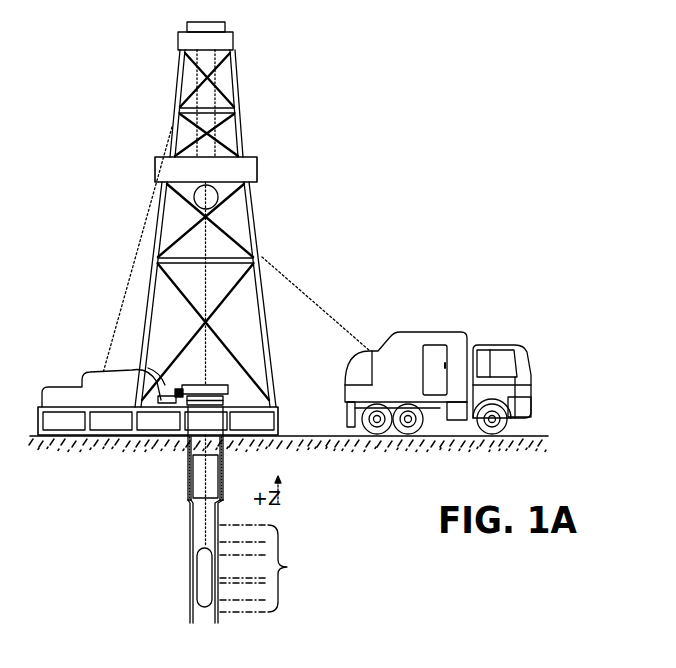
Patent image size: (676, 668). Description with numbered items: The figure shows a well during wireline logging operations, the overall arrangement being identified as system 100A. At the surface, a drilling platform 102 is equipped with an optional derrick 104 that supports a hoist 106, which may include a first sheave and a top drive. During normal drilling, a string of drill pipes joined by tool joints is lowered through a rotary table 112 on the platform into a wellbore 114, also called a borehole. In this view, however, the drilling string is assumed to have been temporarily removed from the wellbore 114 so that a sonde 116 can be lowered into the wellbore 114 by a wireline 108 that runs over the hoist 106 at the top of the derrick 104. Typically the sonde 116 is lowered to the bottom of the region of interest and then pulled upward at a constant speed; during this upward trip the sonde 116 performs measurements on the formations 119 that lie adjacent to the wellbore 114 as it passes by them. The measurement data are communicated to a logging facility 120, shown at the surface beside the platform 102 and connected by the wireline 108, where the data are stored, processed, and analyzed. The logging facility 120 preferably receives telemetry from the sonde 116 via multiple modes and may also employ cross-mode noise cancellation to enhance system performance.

The wellsite system 100A is at (427, 217).
The drilling platform 102 is at (279, 418).
The derrick 104 is at (270, 375).
The hoist 106 is at (219, 197).
The wireline 108 is at (271, 262).
The rotary table 112 is at (220, 385).
The wellbore 114 is at (191, 512).
The sonde 116 is at (199, 568).
The formations 119 is at (274, 568).
The logging facility 120 is at (408, 333).